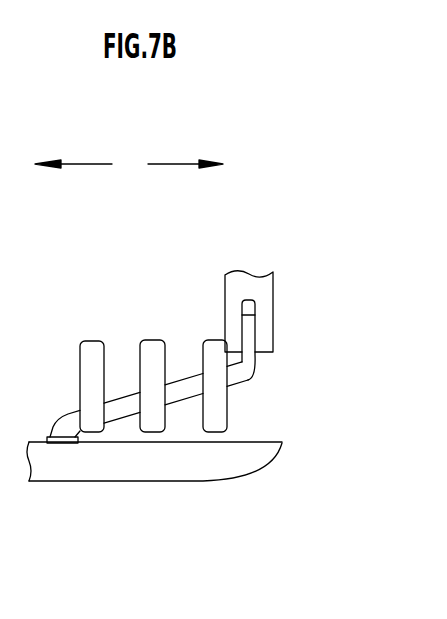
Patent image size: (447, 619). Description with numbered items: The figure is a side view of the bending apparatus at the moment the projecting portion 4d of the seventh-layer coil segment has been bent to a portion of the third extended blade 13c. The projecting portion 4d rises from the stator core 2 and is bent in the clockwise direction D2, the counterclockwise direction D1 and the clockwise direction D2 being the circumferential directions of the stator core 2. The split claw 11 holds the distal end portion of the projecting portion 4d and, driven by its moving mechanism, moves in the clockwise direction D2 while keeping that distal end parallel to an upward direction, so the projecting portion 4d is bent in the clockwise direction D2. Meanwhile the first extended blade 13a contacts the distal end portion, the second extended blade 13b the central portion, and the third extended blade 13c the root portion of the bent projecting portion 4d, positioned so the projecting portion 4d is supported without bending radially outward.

The stator core 2 is at (40, 461).
The split claw 11 is at (230, 283).
The projecting portion 4d is at (62, 418).
The first extended blade 13a is at (215, 433).
The second extended blade 13b is at (155, 340).
The third extended blade 13c is at (90, 341).
The counterclockwise direction D1 is at (90, 164).
The clockwise direction D2 is at (166, 164).